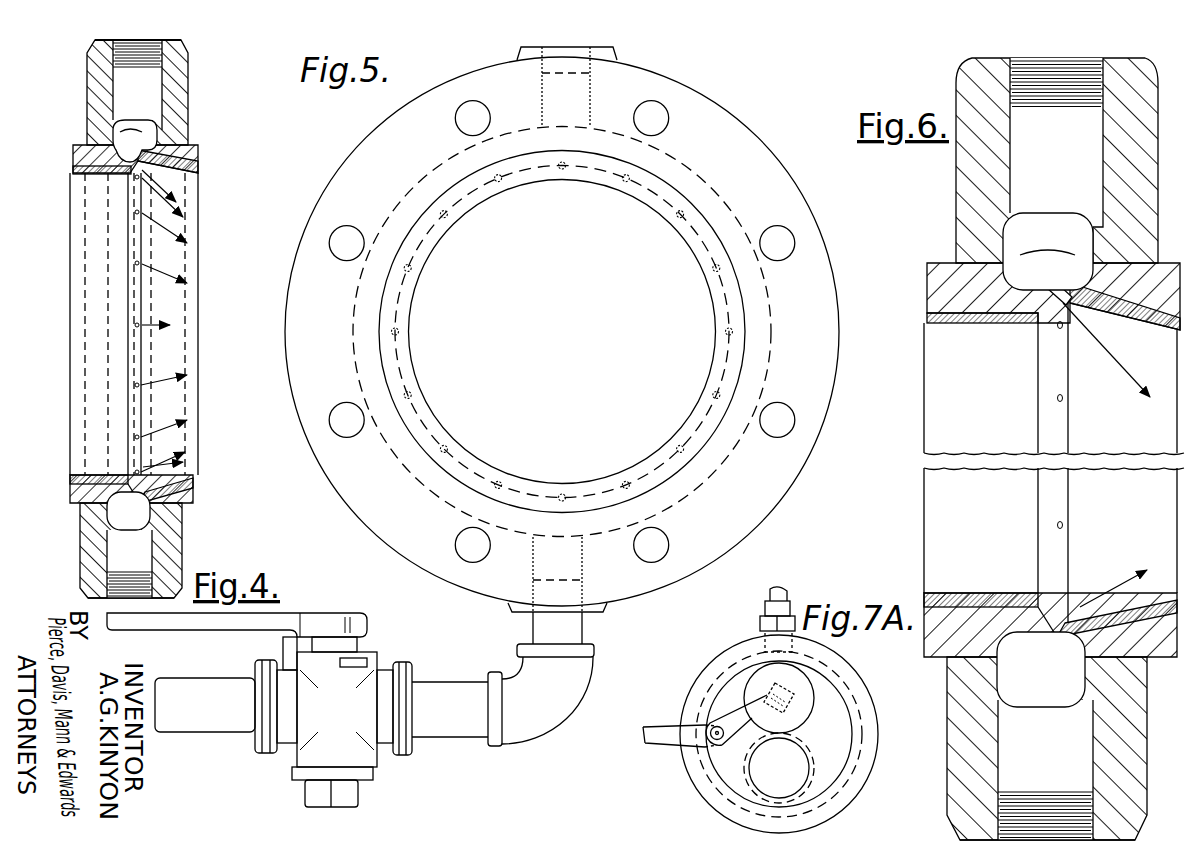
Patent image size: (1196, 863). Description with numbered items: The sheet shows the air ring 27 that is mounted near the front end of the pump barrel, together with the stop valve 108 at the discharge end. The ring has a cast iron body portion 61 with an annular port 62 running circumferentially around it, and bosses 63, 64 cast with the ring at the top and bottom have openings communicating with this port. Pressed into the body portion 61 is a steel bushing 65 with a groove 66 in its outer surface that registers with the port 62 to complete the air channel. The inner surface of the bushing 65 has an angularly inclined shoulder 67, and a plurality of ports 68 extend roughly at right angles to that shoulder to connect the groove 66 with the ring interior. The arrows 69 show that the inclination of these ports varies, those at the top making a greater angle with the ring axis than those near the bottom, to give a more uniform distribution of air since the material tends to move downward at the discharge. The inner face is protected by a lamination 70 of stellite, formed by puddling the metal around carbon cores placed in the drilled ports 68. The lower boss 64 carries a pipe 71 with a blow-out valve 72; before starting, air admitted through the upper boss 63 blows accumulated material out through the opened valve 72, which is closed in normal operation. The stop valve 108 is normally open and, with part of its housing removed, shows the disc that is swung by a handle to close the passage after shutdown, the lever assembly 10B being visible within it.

In FIG. 4, the air ring 27 is at (182, 538).
In FIG. 5, the air ring 27 is at (740, 127).
In FIG. 6, the air ring 27 is at (955, 183).
In FIG. 4, the body portion 61 is at (182, 85).
In FIG. 4, the annular port 62 is at (148, 138).
In FIG. 6, the annular port 62 is at (1085, 262).
In FIG. 4, the upper boss 63 is at (182, 47).
In FIG. 5, the upper boss 63 is at (612, 55).
In FIG. 6, the upper boss 63 is at (970, 67).
In FIG. 4, the lower boss 64 is at (82, 594).
In FIG. 5, the lower boss 64 is at (607, 605).
In FIG. 6, the lower boss 64 is at (953, 830).
In FIG. 4, the bushing 65 is at (196, 158).
In FIG. 6, the bushing 65 is at (945, 290).
In FIG. 4, the groove 66 is at (113, 130).
In FIG. 6, the groove 66 is at (1017, 262).
In FIG. 6, the inclined shoulder 67 is at (1013, 308).
In FIG. 6, the ports 68 is at (1062, 300).
In FIG. 4, the arrows 69 is at (163, 377).
In FIG. 4, the lamination 70 is at (183, 177).
In FIG. 5, the pipe 71 is at (543, 633).
In FIG. 5, the blow-out valve 72 is at (290, 750).
In FIG. 7A, the operating lever 10B is at (800, 697).
In FIG. 7A, the stop valve 108 is at (857, 768).